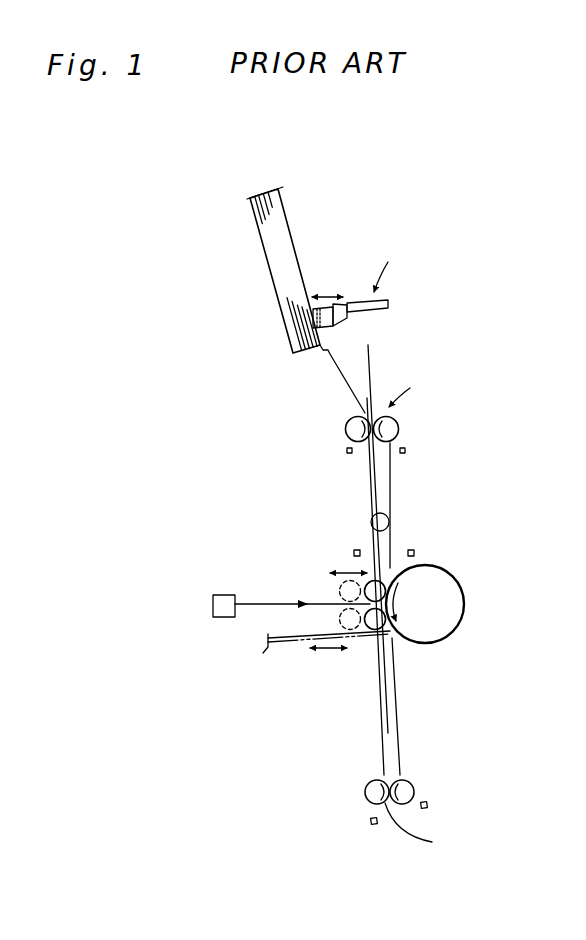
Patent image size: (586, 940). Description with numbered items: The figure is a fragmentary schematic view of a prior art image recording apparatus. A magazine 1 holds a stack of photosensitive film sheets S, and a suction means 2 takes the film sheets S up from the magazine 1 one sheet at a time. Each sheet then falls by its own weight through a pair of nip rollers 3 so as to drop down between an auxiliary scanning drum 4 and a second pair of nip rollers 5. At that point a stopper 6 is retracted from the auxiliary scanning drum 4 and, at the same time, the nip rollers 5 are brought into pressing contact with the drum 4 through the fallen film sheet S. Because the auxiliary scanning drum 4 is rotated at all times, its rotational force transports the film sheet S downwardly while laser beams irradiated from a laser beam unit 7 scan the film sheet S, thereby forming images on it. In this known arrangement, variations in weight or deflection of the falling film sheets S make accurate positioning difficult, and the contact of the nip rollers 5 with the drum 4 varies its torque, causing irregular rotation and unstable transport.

The magazine 1 is at (273, 280).
The suction means 2 is at (340, 323).
The pair of nip rollers 3 is at (399, 418).
The auxiliary scanning drum 4 is at (462, 600).
The pair of nip rollers 5 is at (338, 586).
The stopper 6 is at (292, 648).
The laser beam unit 7 is at (223, 595).
The photosensitive film sheets S is at (293, 263).